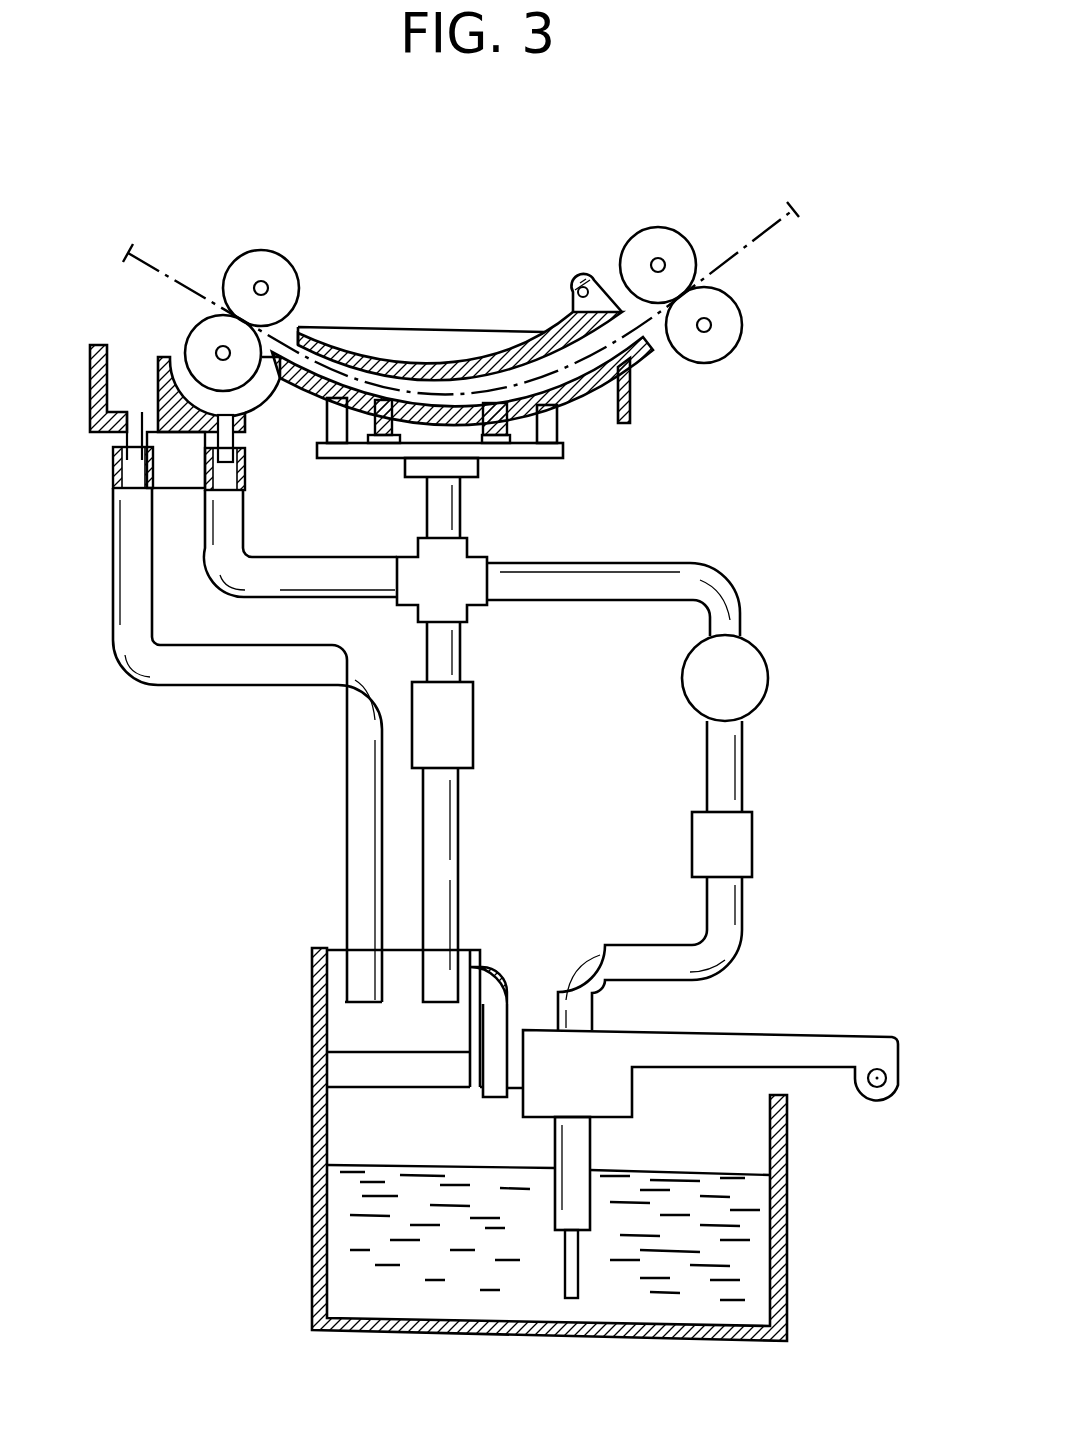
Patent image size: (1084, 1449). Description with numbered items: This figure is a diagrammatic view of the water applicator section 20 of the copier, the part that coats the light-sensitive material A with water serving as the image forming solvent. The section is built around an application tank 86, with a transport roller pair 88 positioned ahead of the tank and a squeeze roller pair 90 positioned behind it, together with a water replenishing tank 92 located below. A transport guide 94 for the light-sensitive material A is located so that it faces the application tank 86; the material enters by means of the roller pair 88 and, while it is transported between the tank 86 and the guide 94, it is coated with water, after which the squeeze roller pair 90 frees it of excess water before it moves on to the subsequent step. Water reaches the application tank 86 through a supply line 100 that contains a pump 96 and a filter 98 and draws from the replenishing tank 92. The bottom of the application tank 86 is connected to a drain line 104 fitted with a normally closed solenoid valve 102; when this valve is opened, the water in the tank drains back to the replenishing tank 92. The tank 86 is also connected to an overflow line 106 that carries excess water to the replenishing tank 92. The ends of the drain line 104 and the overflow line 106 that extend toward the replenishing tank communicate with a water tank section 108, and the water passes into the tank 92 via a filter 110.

The water applicator section 20 is at (488, 231).
The light-sensitive material A is at (778, 238).
The application tank 86 is at (578, 392).
The transport roller pair 88 is at (716, 358).
The squeeze roller pair 90 is at (272, 251).
The water replenishing tank 92 is at (782, 1230).
The transport guide 94 is at (450, 326).
The pump 96 is at (770, 685).
The filter 98 is at (752, 848).
The supply line 100 is at (722, 578).
The solenoid valve 102 is at (475, 727).
The drain line 104 is at (460, 866).
The overflow line 106 is at (162, 674).
The water tank section 108 is at (343, 1027).
The filter 110 is at (343, 1075).